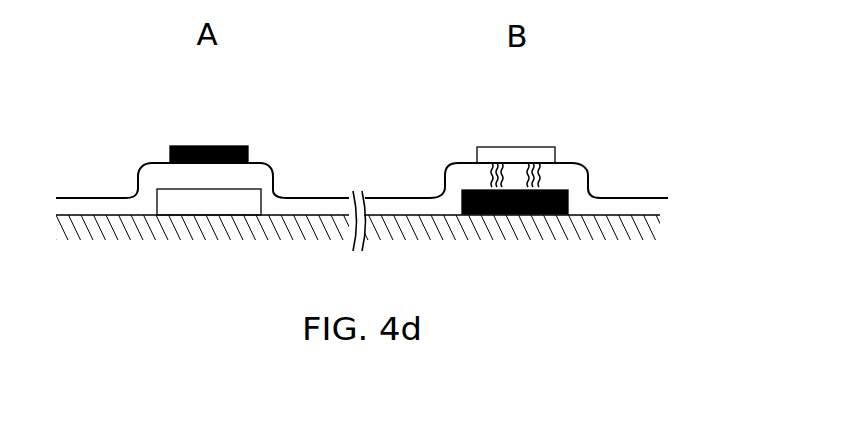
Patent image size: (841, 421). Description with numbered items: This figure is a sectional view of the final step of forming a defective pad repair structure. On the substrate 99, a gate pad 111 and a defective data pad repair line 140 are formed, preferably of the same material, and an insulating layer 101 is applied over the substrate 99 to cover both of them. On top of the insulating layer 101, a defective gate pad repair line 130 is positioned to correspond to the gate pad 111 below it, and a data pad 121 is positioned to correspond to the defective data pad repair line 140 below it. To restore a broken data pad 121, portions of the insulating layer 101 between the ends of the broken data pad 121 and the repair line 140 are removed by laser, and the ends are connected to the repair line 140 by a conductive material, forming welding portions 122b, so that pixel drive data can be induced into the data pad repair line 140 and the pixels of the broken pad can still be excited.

The substrate 99 is at (647, 227).
The insulating layer 101 is at (84, 202).
The gate pad 111 is at (200, 206).
The defective gate pad repair line 130 is at (199, 146).
The data pad 121 is at (505, 147).
The welding portion 122b is at (545, 182).
The defective data pad repair line 140 is at (506, 215).